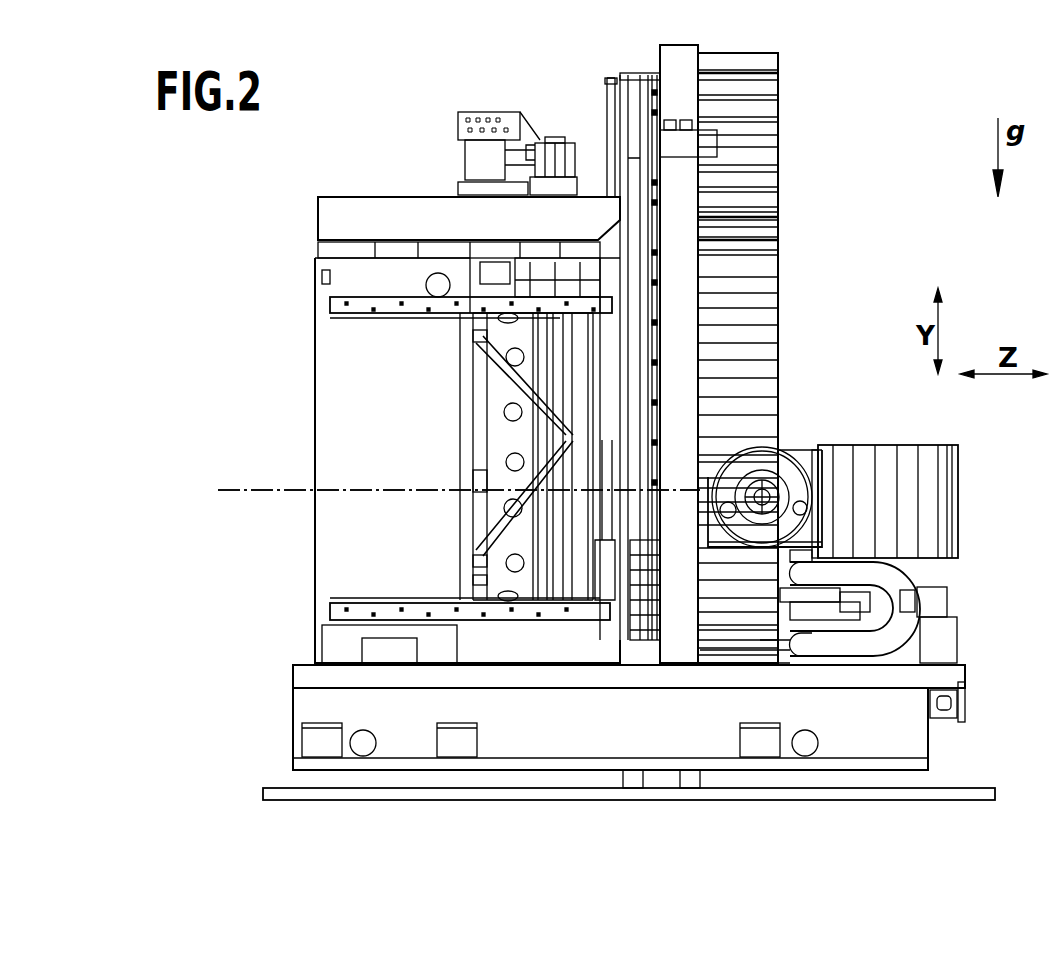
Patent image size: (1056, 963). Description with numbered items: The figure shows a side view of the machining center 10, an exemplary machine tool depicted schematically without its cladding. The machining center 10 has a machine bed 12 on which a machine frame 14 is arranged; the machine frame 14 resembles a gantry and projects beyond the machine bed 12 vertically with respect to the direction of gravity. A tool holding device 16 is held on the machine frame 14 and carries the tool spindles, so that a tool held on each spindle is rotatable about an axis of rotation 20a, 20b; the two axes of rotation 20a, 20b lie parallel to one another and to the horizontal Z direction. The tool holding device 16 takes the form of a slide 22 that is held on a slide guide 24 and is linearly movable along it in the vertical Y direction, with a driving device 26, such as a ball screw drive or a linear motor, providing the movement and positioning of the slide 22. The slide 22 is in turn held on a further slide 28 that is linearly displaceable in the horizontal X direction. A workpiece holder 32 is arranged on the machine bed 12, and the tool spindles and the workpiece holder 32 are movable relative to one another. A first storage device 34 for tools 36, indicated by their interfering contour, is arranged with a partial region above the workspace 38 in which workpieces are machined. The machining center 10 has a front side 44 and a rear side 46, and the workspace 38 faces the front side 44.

The machining center 10 is at (852, 172).
The machine bed 12 is at (905, 737).
The machine frame 14 is at (390, 200).
The tool holding device 16 is at (578, 500).
The axis of rotation 20a is at (238, 488).
The axis of rotation 20b is at (437, 449).
The slide 22 is at (547, 462).
The slide guide 24 is at (548, 370).
The driving device 26 is at (566, 138).
The slide 28 is at (497, 338).
The workpiece holder 32 is at (782, 488).
The first storage device 34 is at (758, 52).
The tools 36 is at (778, 62).
The workspace 38 is at (905, 520).
The front side 44 is at (966, 702).
The rear side 46 is at (293, 710).